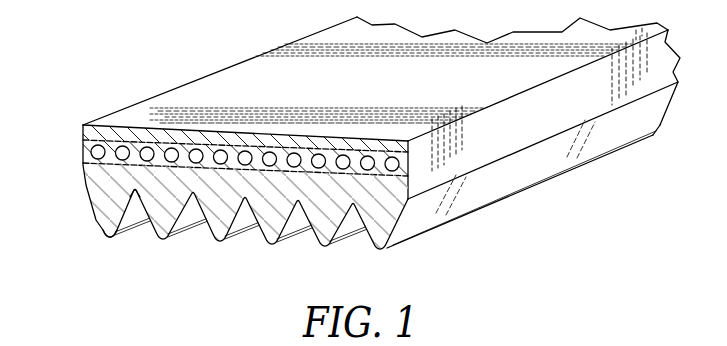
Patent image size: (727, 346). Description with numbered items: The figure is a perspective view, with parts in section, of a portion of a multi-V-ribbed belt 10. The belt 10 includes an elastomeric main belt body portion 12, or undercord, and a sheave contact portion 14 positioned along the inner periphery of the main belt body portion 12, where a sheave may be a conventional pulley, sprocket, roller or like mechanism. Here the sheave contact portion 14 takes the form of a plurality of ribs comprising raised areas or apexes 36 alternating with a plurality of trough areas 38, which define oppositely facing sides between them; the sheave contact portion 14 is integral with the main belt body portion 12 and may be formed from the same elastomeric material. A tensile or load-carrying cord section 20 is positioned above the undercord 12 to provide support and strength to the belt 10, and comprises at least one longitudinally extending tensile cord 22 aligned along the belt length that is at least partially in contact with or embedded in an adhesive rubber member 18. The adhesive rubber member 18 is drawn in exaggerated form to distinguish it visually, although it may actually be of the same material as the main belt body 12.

The multi-V-ribbed belt 10 is at (221, 50).
The main belt body portion 12 is at (392, 199).
The sheave contact portion 14 is at (236, 243).
The adhesive rubber member 18 is at (83, 138).
The tensile cord section 20 is at (416, 171).
The tensile cord 22 is at (83, 161).
The apexes 36 is at (109, 238).
The trough areas 38 is at (137, 192).